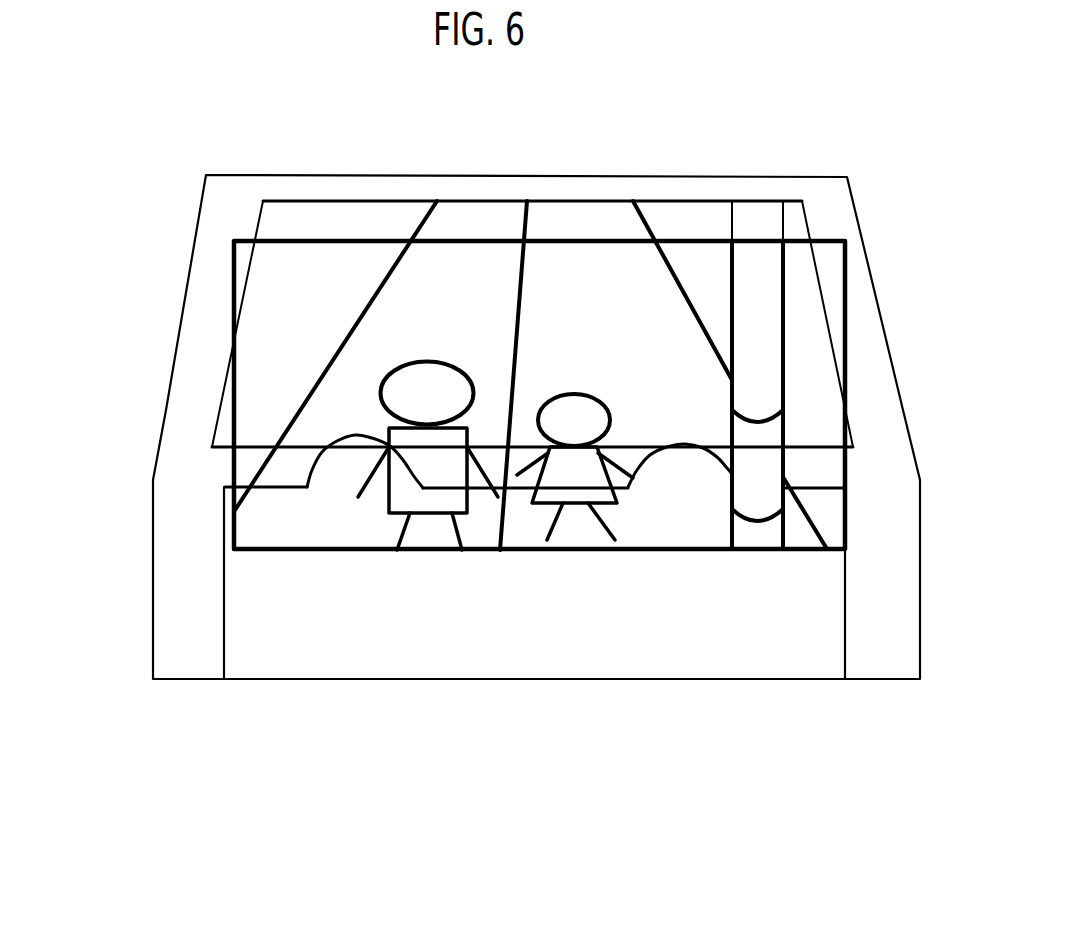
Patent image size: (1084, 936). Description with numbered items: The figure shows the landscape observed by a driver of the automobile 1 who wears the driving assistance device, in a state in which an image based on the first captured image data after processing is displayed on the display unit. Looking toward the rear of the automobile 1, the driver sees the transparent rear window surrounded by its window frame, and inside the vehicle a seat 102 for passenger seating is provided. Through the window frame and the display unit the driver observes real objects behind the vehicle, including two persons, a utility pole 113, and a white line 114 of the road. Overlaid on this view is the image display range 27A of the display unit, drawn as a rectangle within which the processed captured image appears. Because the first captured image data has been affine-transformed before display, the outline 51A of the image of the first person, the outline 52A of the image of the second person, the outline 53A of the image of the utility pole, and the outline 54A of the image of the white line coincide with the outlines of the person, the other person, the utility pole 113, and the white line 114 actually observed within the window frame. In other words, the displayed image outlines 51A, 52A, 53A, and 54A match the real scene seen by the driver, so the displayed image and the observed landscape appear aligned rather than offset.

The automobile 1 is at (892, 367).
The utility pole 113 is at (758, 217).
The white line 114 is at (635, 222).
The outline of the image 54 54A is at (697, 318).
The outline of the image 53 53A is at (785, 277).
The image display range 27A is at (547, 550).
The seat 102 is at (330, 480).
The outline of the image 51 51A is at (378, 397).
The outline of the image 52 52A is at (588, 508).